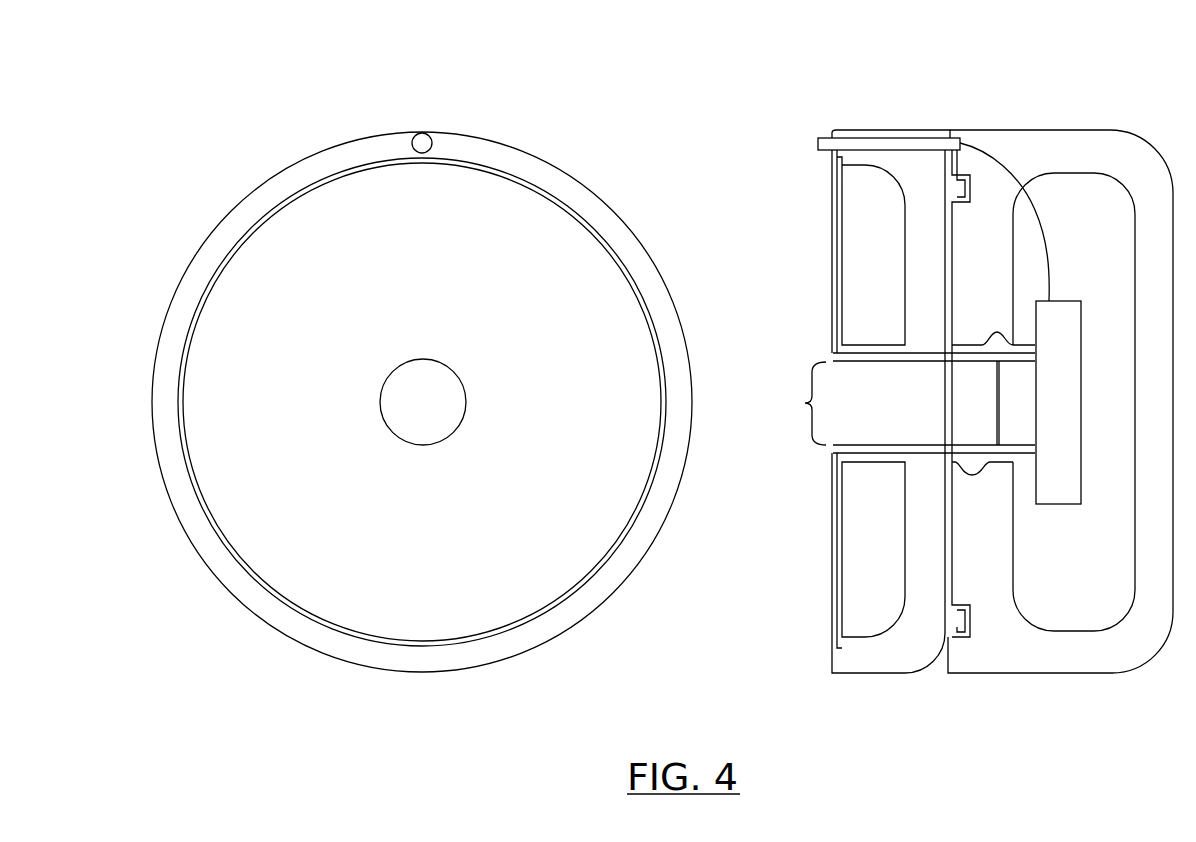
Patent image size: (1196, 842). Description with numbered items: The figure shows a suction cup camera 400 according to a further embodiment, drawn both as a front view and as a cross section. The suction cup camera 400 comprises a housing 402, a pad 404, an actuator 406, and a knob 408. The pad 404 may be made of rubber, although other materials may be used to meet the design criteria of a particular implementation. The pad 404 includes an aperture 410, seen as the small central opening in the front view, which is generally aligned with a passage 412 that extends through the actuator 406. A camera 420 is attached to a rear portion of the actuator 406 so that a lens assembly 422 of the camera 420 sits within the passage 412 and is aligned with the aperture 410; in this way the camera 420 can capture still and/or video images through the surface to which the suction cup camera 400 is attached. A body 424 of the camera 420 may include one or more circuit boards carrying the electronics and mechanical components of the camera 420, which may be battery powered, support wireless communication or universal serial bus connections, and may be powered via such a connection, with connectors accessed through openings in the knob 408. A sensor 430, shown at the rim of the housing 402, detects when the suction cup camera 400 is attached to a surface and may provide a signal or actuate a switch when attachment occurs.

The suction cup camera 400 is at (330, 52).
The housing 402 is at (332, 146).
The pad 404 is at (440, 273).
The actuator 406 is at (950, 447).
The knob 408 is at (1105, 130).
The aperture 410 is at (400, 365).
The passage 412 is at (793, 403).
The camera 420 is at (1057, 301).
The lens assembly 422 is at (1007, 385).
The body 424 is at (1047, 385).
The sensor 430 is at (429, 135).